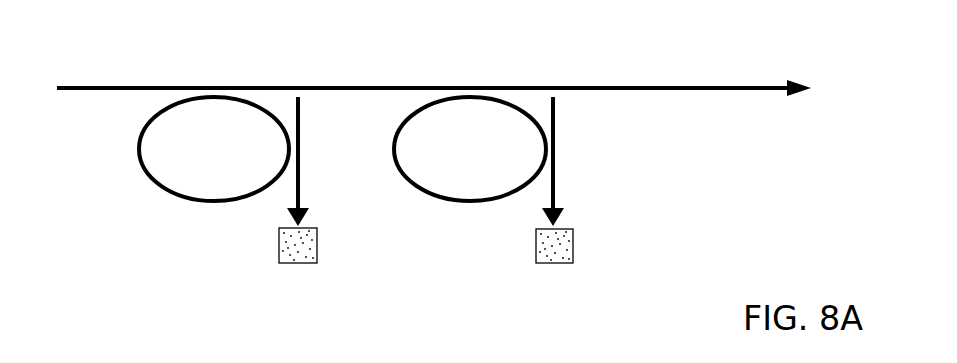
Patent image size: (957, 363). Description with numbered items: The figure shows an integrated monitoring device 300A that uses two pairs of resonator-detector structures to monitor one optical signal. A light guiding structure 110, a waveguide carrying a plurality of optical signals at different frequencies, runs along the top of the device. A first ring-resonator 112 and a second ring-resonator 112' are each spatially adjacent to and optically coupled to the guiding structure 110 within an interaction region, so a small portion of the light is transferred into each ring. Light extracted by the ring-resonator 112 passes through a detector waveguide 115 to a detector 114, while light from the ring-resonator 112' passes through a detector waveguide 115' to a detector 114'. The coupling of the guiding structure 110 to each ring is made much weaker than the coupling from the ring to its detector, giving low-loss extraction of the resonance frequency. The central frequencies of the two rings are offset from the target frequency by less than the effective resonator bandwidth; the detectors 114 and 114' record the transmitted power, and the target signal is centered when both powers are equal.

The light guiding structure 110 is at (430, 77).
The integrated monitoring device 300A is at (556, 68).
The ring-resonator 112 is at (163, 154).
The detector 114 is at (273, 268).
The detector waveguide 115 is at (339, 161).
The ring-resonator 112' is at (463, 175).
The detector 114' is at (530, 268).
The detector waveguide 115' is at (597, 161).